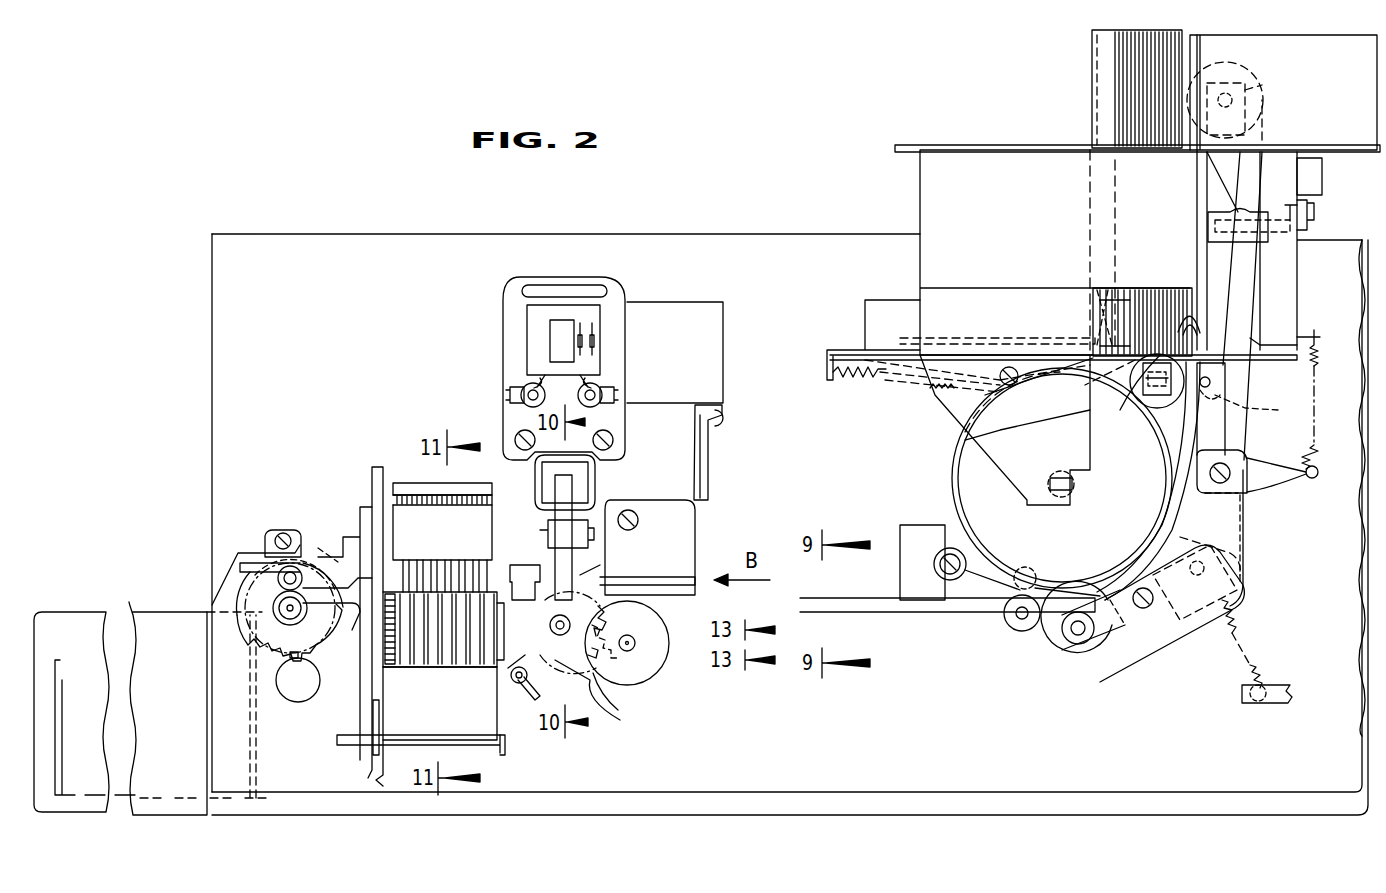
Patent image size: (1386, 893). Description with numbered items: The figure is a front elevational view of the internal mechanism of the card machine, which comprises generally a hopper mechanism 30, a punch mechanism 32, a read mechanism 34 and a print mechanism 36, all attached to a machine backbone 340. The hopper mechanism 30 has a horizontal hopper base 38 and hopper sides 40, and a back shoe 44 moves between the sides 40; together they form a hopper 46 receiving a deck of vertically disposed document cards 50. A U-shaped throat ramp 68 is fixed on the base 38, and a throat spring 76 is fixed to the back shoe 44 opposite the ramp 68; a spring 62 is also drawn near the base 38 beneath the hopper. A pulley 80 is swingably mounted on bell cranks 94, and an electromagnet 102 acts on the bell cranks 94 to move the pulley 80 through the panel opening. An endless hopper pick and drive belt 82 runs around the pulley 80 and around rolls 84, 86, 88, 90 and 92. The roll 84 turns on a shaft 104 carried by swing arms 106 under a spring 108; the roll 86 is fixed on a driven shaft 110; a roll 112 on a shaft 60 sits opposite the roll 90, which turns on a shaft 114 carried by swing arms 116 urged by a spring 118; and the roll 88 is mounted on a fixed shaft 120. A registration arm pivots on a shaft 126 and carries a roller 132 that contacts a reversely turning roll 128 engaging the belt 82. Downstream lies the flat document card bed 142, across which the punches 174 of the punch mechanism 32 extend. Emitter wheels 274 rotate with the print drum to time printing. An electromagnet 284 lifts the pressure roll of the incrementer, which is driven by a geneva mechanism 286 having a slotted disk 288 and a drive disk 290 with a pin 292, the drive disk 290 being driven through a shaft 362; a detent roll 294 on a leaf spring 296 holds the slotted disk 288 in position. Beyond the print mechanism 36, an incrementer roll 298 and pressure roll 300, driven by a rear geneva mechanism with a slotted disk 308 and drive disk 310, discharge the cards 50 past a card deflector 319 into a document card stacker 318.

The hopper mechanism 30 is at (1330, 217).
The punch mechanism 32 is at (485, 358).
The read mechanism 34 is at (525, 562).
The print mechanism 36 is at (400, 450).
The hopper base 38 is at (836, 350).
The hopper sides 40 is at (1017, 250).
The back shoe 44 is at (1090, 198).
The hopper 46 is at (1190, 30).
The document card 50 is at (1135, 62).
The shaft 60 is at (1158, 390).
The spring 62 is at (862, 380).
The throat ramp 68 is at (1207, 300).
The throat spring 76 is at (1118, 288).
The pulley 80 is at (1262, 82).
The hopper pick and drive belt 82 is at (1290, 472).
The roll 84 is at (1165, 548).
The roll 86 is at (1060, 658).
The roll 88 is at (1064, 548).
The roll 90 is at (1250, 408).
The roll 92 is at (1238, 212).
The bell cranks 94 is at (1297, 267).
The electromagnet 102 is at (1322, 178).
The shaft 104 is at (1197, 576).
The swing arms 106 is at (1155, 625).
The spring 108 is at (1238, 620).
The shaft 110 is at (1085, 633).
The roll 112 is at (1138, 372).
The shaft 114 is at (1210, 382).
The swing arms 116 is at (1226, 450).
The spring 118 is at (1316, 430).
The shaft 120 is at (1074, 483).
The shaft 126 is at (948, 550).
The reversely turning roll 128 is at (1018, 635).
The roller 132 is at (965, 583).
The document card bed 142 is at (972, 608).
The punches 174 is at (585, 556).
The emitter wheels 274 is at (398, 595).
The electromagnet 284 is at (588, 480).
The geneva mechanism 286 is at (622, 693).
The slotted disk 288 is at (597, 703).
The drive disk 290 is at (650, 658).
The pin 292 is at (575, 633).
The detent roll 294 is at (512, 680).
The leaf spring 296 is at (522, 697).
The incrementer roll 298 is at (300, 628).
The pressure roll 300 is at (300, 566).
The slotted disk 308 is at (305, 545).
The drive disk 310 is at (300, 703).
The document card stacker 318 is at (165, 610).
The card deflector 319 is at (214, 606).
The machine backbone 340 is at (773, 237).
The shaft 362 is at (630, 650).